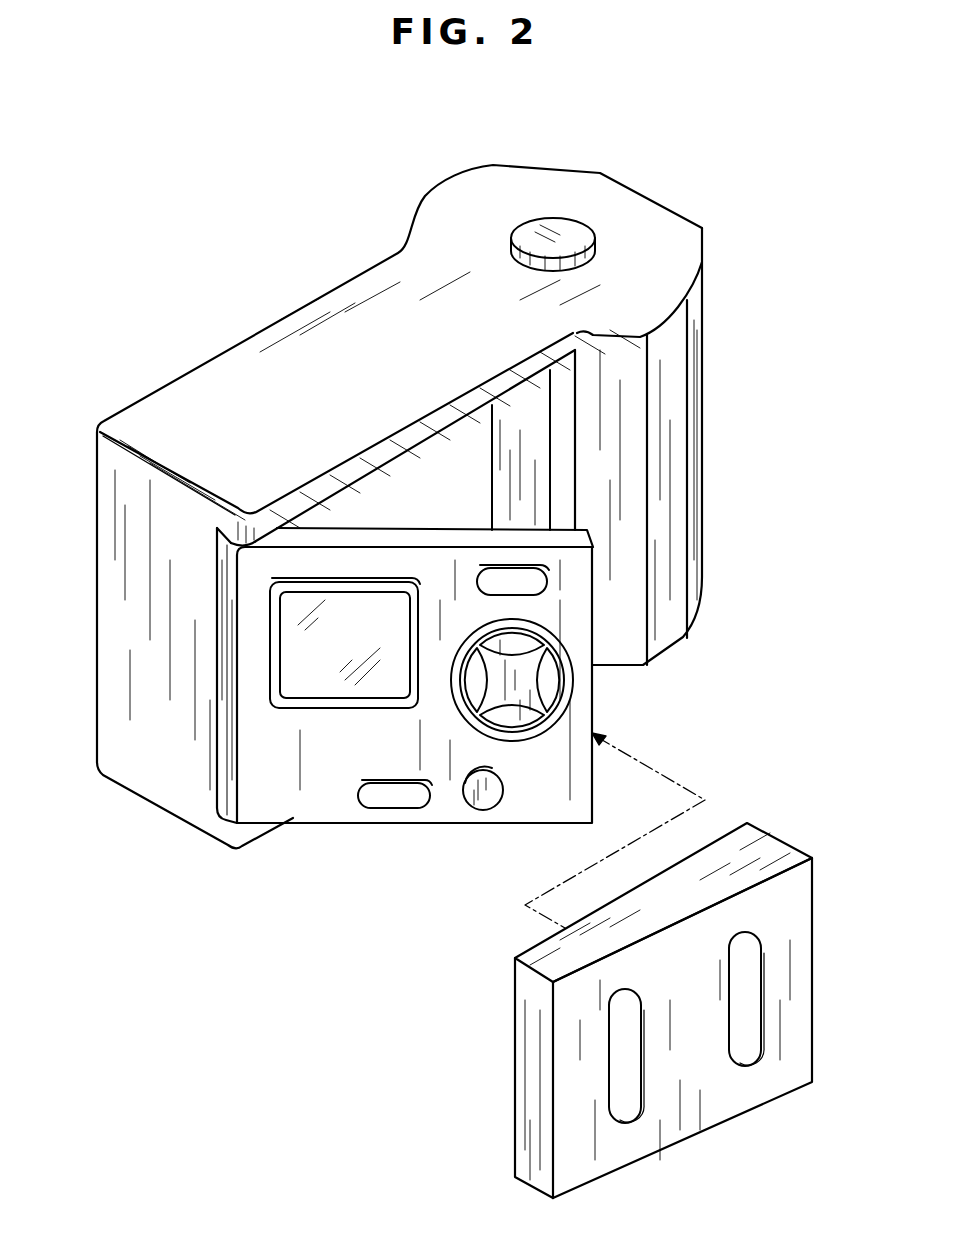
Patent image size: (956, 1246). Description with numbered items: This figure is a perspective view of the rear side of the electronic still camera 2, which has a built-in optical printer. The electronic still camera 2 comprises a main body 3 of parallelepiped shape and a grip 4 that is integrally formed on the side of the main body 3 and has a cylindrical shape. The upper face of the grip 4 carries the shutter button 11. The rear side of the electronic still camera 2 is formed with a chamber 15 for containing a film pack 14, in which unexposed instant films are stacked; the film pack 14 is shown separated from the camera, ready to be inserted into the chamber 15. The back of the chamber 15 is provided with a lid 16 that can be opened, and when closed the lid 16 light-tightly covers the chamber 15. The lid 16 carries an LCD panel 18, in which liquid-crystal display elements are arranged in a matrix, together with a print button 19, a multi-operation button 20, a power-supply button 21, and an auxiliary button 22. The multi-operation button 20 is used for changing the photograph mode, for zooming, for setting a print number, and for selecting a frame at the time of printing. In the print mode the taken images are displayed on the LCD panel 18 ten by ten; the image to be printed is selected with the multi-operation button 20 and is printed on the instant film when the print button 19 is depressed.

The electronic still camera 2 is at (262, 293).
The main body 3 is at (170, 812).
The grip 4 is at (702, 423).
The shutter button 11 is at (553, 228).
The film pack 14 is at (705, 1128).
The chamber 15 is at (527, 430).
The lid 16 is at (320, 808).
The LCD panel 18 is at (322, 682).
The print button 19 is at (483, 800).
The multi-operation button 20 is at (540, 683).
The power-supply button 21 is at (502, 582).
The auxiliary button 22 is at (393, 800).